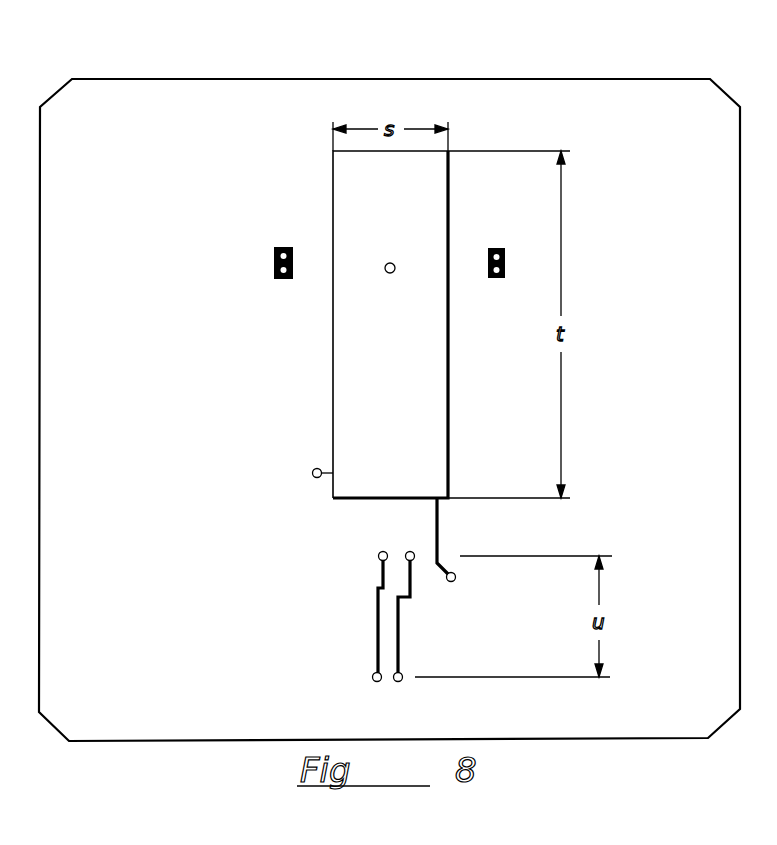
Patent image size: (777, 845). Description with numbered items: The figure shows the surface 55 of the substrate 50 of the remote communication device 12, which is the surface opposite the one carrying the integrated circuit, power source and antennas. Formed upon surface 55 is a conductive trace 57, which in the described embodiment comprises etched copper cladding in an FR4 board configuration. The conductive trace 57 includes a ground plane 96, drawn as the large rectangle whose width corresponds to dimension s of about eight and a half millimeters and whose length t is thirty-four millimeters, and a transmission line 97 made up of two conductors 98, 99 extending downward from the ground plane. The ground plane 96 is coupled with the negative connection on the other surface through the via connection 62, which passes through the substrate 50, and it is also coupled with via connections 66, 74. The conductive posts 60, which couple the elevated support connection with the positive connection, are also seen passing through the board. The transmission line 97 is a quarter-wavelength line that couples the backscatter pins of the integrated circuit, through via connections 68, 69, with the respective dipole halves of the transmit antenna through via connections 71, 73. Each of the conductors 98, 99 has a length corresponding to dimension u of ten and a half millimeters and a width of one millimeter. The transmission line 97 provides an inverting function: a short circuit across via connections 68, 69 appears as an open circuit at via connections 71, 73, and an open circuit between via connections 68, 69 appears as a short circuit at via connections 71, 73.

The remote communication device 12 is at (634, 68).
The substrate 50 is at (398, 72).
The surface 55 is at (690, 283).
The conductive trace 57 is at (258, 137).
The conductive posts 60 is at (273, 259).
The via connection 62 is at (449, 226).
The via connection 66 is at (312, 473).
The via connection 68 is at (380, 552).
The via connection 69 is at (414, 553).
The via connection 71 is at (403, 681).
The via connection 73 is at (374, 681).
The via connection 74 is at (456, 577).
The ground plane 96 is at (458, 390).
The transmission line 97 is at (362, 631).
The conductor 98 is at (375, 608).
The conductor 99 is at (402, 634).